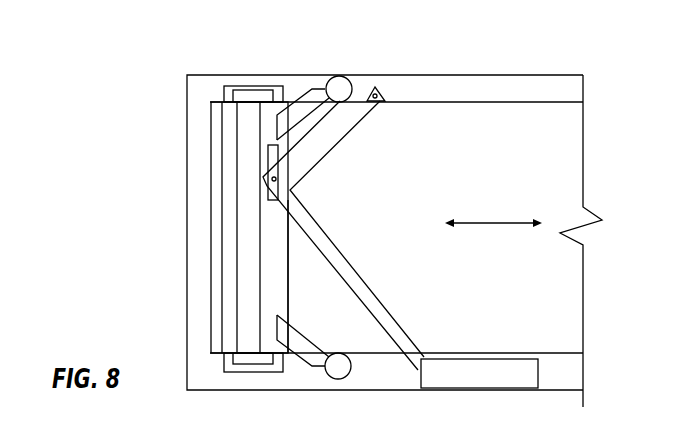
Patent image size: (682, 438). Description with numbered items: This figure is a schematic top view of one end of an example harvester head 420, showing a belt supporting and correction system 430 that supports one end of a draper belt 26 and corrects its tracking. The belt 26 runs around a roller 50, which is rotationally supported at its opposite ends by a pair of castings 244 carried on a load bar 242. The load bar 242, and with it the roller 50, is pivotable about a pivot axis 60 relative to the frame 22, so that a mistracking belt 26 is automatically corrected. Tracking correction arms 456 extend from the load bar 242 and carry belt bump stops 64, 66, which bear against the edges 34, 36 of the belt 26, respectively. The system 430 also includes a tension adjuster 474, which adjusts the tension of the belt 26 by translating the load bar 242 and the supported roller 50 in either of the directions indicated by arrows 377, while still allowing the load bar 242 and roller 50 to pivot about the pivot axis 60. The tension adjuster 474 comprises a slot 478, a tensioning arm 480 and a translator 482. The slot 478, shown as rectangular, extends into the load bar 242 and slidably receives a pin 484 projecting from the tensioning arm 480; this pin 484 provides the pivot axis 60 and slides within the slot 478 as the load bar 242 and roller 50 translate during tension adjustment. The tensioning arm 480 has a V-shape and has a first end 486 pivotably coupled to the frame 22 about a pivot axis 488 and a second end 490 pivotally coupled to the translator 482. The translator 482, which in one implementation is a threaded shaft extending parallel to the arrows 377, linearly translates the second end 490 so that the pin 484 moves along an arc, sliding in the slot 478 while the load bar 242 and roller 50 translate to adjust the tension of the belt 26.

The frame 22 is at (187, 168).
The draper belt 26 is at (583, 173).
The edge 34 is at (565, 353).
The edge 36 is at (507, 102).
The roller 50 is at (222, 268).
The pivot axis 60 is at (293, 158).
The belt bump stop 64 is at (350, 380).
The belt bump stop 66 is at (352, 79).
The load bar 242 is at (288, 307).
The castings 244 is at (243, 86).
The arrows 377 is at (478, 226).
The harvester head 420 is at (60, 112).
The belt supporting and correction system 430 is at (212, 82).
The tracking correction arms 456 is at (307, 100).
The tension adjuster 474 is at (548, 373).
The slot 478 is at (268, 162).
The tensioning arm 480 is at (343, 247).
The translator 482 is at (505, 388).
The pin 484 is at (277, 181).
The first end 486 is at (390, 118).
The pivot axis 488 is at (383, 92).
The second end 490 is at (425, 346).